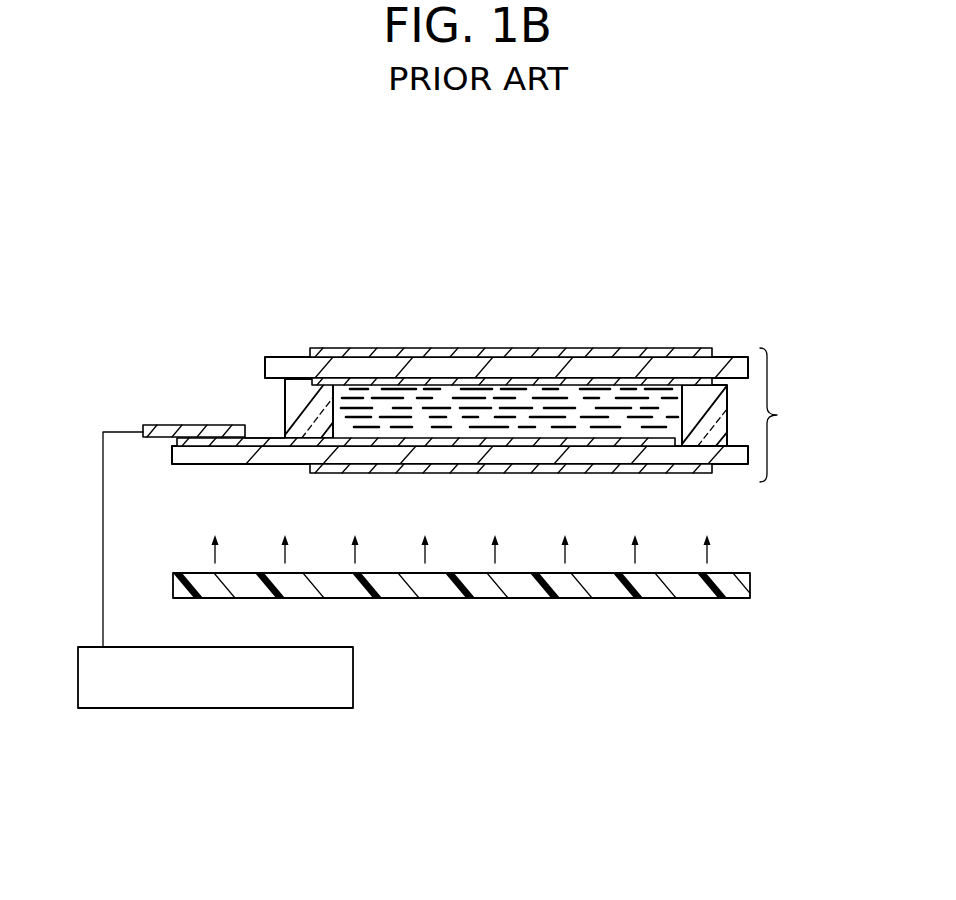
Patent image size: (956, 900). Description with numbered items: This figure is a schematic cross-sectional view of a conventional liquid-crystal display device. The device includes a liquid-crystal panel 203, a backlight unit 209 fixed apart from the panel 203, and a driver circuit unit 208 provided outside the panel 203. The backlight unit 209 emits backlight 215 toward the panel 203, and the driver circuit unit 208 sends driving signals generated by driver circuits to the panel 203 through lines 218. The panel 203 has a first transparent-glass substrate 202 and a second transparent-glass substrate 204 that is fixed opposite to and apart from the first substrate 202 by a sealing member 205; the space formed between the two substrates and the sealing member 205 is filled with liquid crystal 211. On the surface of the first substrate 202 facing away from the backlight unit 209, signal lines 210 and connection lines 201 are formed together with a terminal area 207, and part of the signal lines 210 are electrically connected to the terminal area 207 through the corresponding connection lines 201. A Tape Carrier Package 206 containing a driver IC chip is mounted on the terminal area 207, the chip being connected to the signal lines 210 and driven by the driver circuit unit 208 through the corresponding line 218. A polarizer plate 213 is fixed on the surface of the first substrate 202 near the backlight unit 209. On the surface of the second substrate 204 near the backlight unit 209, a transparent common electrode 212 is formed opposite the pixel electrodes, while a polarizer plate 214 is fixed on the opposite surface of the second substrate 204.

The connection lines 201 is at (262, 436).
The first transparent-glass substrate 202 is at (732, 458).
The liquid-crystal panel 203 is at (840, 429).
The second transparent-glass substrate 204 is at (505, 370).
The sealing member 205 is at (290, 405).
The Tape Carrier Package 206 is at (183, 425).
The terminal area 207 is at (217, 447).
The driver circuit unit 208 is at (205, 708).
The backlight unit 209 is at (565, 598).
The signal lines 210 is at (516, 434).
The liquid crystal 211 is at (610, 398).
The transparent common electrode 212 is at (333, 369).
The polarizer plate 213 is at (693, 473).
The polarizer plate 214 is at (355, 348).
The backlight 215 is at (708, 553).
The lines 218 is at (102, 553).